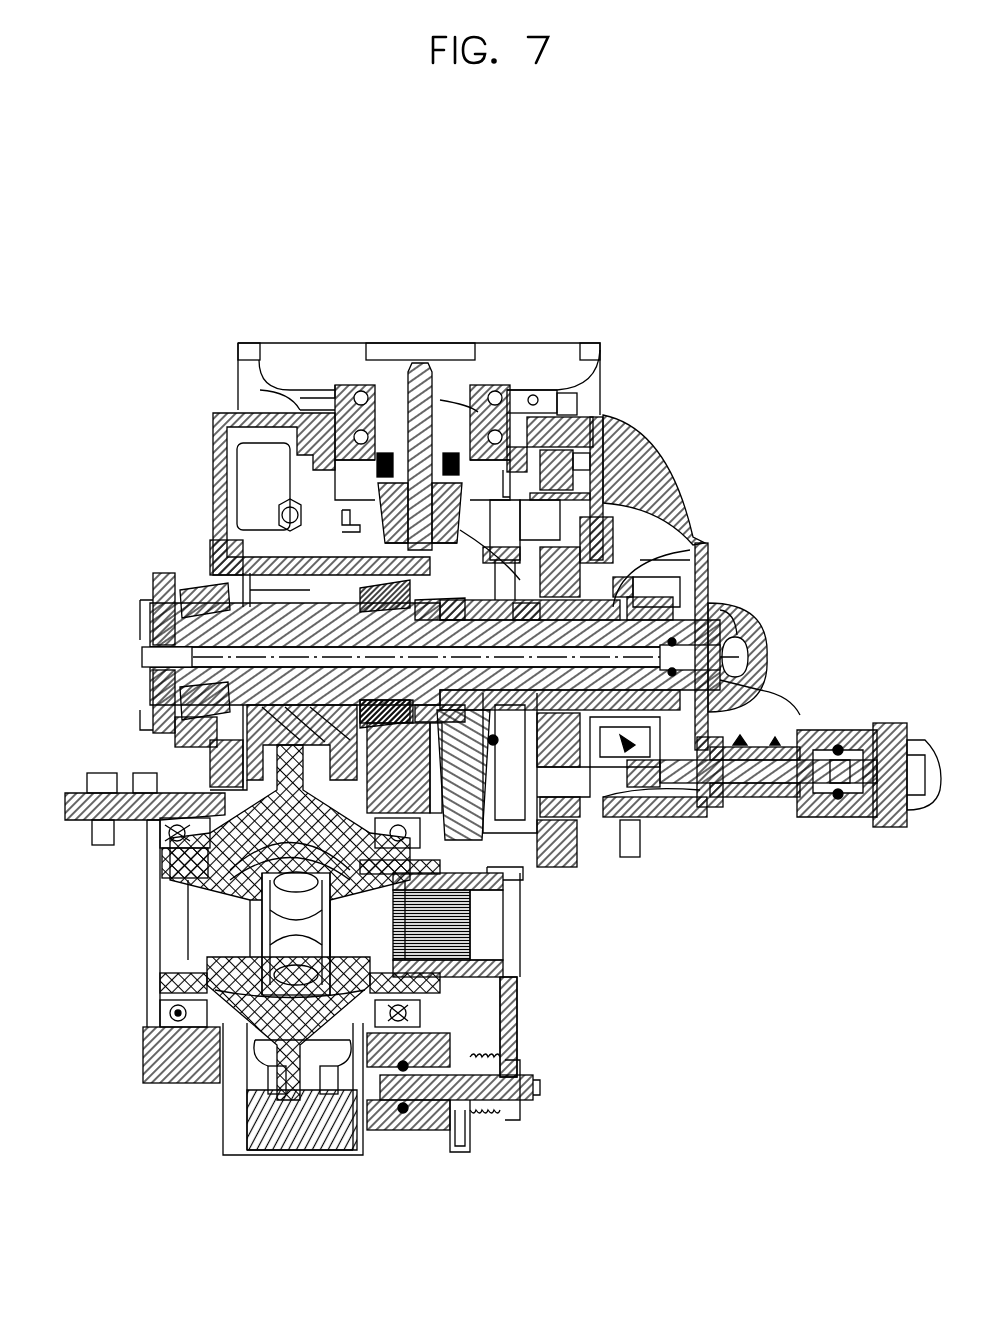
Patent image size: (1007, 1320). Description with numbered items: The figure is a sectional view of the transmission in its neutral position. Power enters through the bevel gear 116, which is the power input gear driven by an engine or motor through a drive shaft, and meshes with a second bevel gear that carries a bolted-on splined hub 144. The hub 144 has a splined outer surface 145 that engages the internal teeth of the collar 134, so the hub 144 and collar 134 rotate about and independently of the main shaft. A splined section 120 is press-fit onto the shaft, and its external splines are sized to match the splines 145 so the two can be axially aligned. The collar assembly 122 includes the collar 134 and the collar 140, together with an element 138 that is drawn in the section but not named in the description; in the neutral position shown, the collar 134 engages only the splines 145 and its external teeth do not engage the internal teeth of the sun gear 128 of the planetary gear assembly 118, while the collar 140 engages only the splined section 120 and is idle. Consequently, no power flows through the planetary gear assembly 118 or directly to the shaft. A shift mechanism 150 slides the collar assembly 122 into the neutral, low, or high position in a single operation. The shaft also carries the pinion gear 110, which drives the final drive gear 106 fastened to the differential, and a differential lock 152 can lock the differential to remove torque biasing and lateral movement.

The gear 106 is at (276, 1160).
The gear 110 is at (277, 607).
The bevel gear 116 is at (377, 493).
The planetary gear assembly 118 is at (573, 853).
The splined section 120 is at (690, 710).
The collar assembly 122 is at (720, 810).
The sun gear 128 is at (673, 790).
The collar 134 is at (578, 592).
The clutch member 138 is at (568, 585).
The collar 140 is at (665, 600).
The splined hub 144 is at (604, 540).
The splines 145 is at (676, 594).
The shift mechanism 150 is at (825, 733).
The differential lock 152 is at (527, 1093).